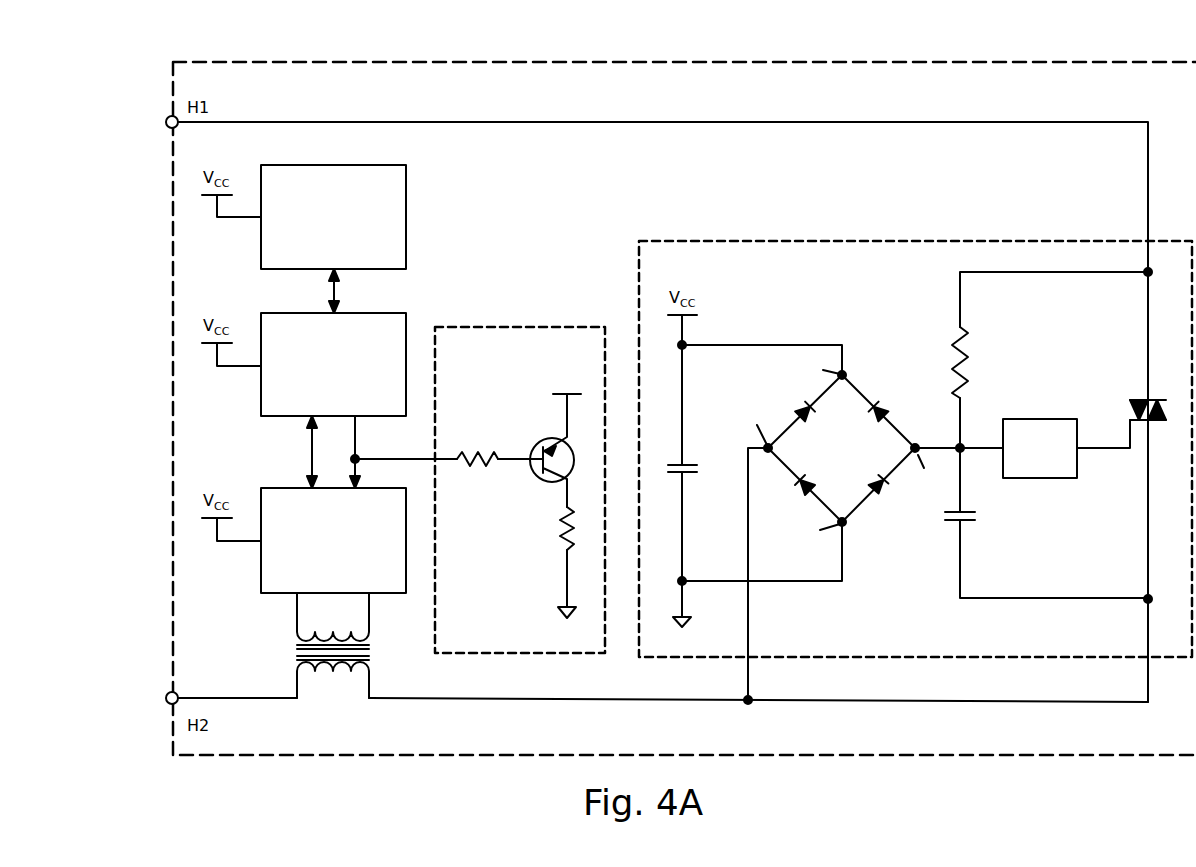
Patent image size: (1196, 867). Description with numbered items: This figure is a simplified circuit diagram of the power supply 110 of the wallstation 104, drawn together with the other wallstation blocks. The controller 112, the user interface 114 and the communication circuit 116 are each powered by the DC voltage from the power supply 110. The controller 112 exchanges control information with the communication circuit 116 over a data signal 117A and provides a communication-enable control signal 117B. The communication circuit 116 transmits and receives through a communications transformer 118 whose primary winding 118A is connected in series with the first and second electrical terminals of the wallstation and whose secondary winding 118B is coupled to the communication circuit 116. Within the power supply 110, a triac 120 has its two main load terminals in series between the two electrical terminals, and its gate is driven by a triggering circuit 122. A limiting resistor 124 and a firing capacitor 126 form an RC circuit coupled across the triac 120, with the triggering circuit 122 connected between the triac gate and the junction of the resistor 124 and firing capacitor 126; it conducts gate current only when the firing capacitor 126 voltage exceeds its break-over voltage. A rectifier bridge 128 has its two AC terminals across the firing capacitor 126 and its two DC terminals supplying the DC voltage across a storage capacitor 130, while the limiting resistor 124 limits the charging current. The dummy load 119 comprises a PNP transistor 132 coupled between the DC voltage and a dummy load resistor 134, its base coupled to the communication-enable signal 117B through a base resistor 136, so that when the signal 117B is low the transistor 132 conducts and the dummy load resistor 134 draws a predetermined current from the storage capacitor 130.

The wallstation 104 is at (734, 62).
The power supply 110 is at (727, 241).
The controller 112 is at (270, 324).
The user interface 114 is at (375, 181).
The communication circuit 116 is at (391, 578).
The data signal 117A is at (312, 452).
The communication-enable control signal 117B is at (358, 436).
The communications transformer 118 is at (295, 650).
The primary winding 118A is at (333, 685).
The secondary winding 118B is at (333, 617).
The dummy load 119 is at (487, 327).
The triac 120 is at (1135, 402).
The triggering circuit 122 is at (1060, 428).
The limiting resistor 124 is at (971, 346).
The firing capacitor 126 is at (972, 522).
The rectifier bridge 128 is at (884, 374).
The storage capacitor 130 is at (692, 473).
The PNP bipolar-junction transistor 132 is at (541, 443).
The dummy load resistor 134 is at (557, 527).
The base resistor 136 is at (482, 450).